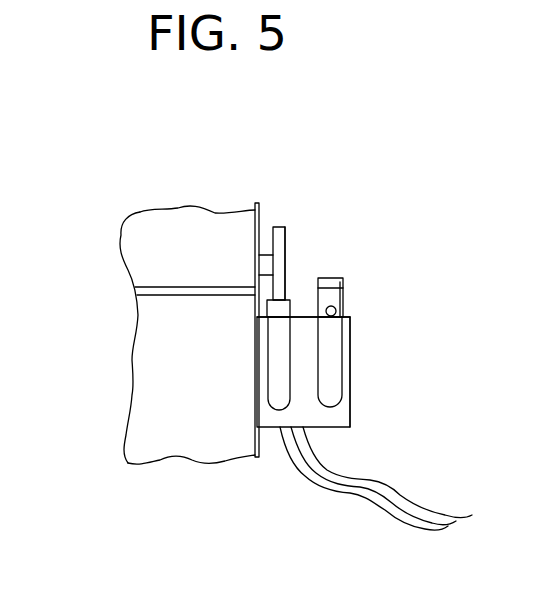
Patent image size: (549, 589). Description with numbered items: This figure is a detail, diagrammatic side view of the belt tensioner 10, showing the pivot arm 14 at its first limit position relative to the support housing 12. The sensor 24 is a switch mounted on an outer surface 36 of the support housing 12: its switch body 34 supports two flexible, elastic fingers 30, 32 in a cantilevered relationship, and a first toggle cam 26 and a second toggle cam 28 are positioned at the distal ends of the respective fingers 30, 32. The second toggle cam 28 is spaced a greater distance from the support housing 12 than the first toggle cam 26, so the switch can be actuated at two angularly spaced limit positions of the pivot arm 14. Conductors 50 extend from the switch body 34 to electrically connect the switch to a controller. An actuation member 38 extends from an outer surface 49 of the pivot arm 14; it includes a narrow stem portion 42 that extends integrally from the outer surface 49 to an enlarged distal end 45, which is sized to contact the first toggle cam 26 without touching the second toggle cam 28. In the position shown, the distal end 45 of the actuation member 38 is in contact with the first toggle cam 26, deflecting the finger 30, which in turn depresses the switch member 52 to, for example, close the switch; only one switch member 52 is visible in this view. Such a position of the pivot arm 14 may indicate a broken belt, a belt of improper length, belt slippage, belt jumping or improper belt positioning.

The belt tensioner 10 is at (393, 182).
The support housing 12 is at (168, 423).
The pivot arm 14 is at (133, 260).
The sensor 24 is at (342, 417).
The first toggle cam 26 is at (267, 306).
The second toggle cam 28 is at (333, 280).
The finger 30 is at (299, 317).
The finger 32 is at (337, 288).
The switch body 34 is at (352, 358).
The outer surface 36 is at (145, 360).
The actuation member 38 is at (278, 226).
The stem portion 42 is at (259, 203).
The distal end 45 is at (286, 237).
The outer surface 49 is at (170, 220).
The conductors 50 is at (384, 502).
The switch member 52 is at (337, 309).